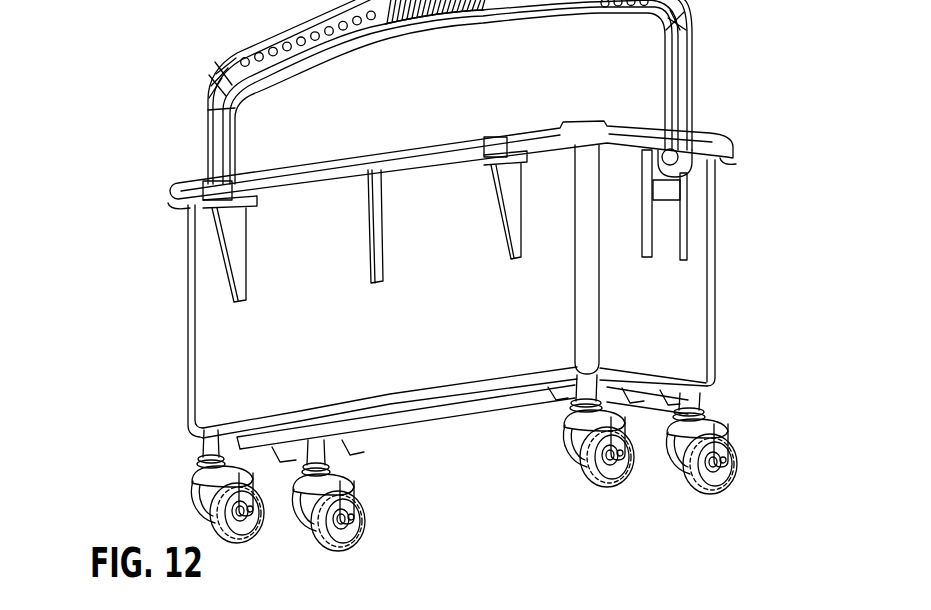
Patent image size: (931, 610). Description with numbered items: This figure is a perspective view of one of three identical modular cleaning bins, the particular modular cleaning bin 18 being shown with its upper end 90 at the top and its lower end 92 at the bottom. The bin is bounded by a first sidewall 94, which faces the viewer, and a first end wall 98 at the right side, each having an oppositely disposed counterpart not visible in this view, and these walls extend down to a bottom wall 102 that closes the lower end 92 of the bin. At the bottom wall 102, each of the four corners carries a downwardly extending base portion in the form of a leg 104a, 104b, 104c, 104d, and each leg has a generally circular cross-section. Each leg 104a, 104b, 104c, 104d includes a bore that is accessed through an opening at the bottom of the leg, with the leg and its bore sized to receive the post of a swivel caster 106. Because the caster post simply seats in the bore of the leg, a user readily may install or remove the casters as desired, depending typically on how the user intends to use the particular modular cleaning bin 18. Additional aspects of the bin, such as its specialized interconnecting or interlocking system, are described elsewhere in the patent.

The modular cleaning bin 18 is at (129, 133).
The upper end 90 is at (722, 122).
The lower end 92 is at (732, 388).
The first sidewall 94 is at (222, 328).
The first end wall 98 is at (683, 288).
The bottom wall 102 is at (423, 420).
The leg 104a is at (203, 449).
The leg 104b is at (577, 395).
The leg 104c is at (703, 410).
The leg 104d is at (330, 463).
The swivel caster 106 is at (608, 485).